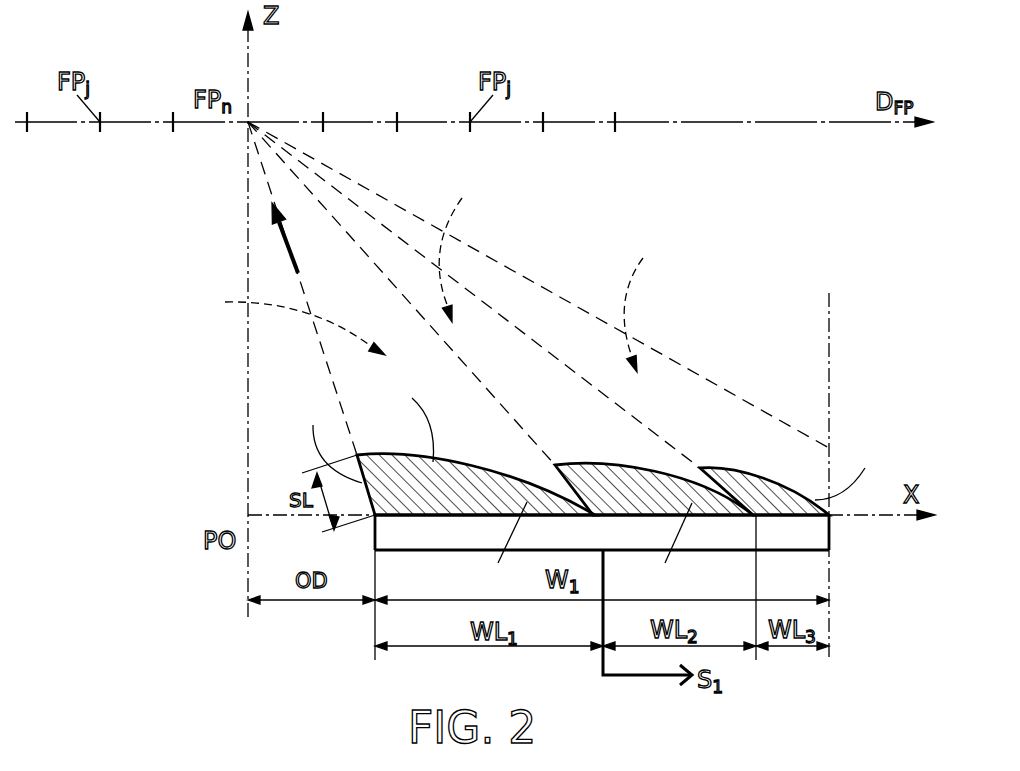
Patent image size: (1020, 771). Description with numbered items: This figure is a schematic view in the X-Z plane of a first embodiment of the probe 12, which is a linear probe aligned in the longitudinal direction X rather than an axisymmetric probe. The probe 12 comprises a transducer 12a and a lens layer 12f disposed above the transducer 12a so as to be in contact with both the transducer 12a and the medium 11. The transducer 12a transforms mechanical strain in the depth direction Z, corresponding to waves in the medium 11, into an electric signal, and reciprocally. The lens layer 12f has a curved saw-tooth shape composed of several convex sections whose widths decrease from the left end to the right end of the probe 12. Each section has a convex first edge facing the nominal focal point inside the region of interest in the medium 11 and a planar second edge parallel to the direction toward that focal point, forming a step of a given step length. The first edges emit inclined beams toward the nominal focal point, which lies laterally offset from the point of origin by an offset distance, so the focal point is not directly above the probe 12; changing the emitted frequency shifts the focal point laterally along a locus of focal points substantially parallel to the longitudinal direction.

The medium 11 is at (586, 247).
The probe 12 is at (780, 270).
The transducer 12a is at (815, 527).
The lens layer 12f is at (453, 517).